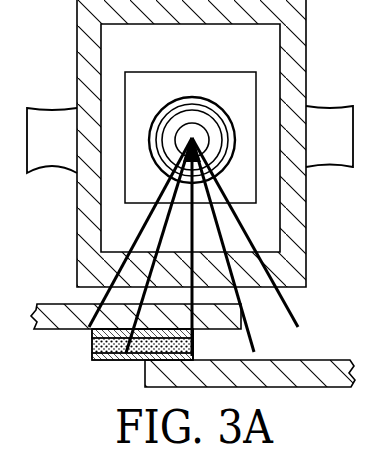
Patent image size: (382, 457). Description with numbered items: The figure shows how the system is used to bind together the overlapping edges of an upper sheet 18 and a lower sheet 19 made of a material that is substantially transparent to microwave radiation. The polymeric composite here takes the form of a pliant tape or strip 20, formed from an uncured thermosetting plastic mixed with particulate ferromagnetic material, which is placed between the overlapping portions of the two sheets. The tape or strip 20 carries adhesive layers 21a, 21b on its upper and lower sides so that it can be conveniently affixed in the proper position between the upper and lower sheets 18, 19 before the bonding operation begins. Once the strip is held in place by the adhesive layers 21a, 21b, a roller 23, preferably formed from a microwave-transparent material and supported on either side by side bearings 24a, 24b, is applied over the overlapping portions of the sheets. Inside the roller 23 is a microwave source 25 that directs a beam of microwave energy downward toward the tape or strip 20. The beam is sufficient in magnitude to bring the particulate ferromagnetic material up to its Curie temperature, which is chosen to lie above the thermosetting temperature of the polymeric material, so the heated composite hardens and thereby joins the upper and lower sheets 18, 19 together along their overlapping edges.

The upper sheet 18 is at (50, 304).
The lower sheet 19 is at (301, 387).
The tape or strip 20 is at (143, 363).
The adhesive layer 21a is at (107, 360).
The adhesive layer 21b is at (201, 336).
The roller 23 is at (298, 256).
The side bearing 24a is at (18, 114).
The side bearing 24b is at (356, 104).
The microwave source 25 is at (182, 97).